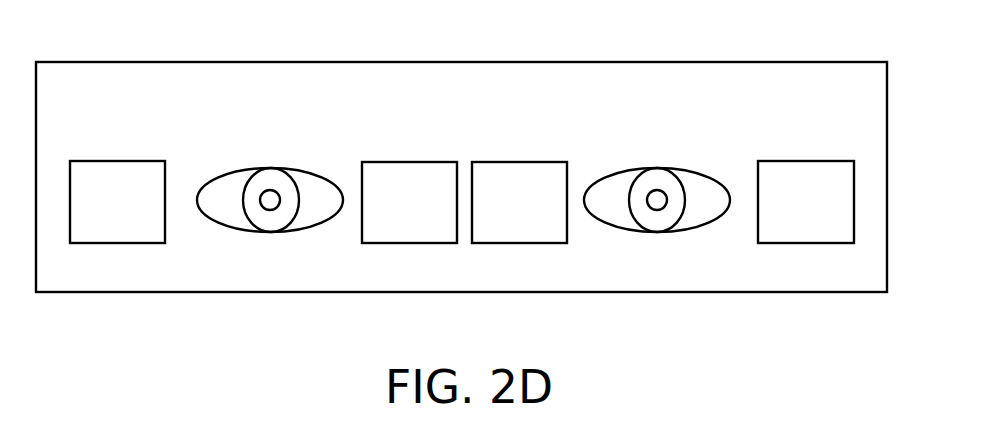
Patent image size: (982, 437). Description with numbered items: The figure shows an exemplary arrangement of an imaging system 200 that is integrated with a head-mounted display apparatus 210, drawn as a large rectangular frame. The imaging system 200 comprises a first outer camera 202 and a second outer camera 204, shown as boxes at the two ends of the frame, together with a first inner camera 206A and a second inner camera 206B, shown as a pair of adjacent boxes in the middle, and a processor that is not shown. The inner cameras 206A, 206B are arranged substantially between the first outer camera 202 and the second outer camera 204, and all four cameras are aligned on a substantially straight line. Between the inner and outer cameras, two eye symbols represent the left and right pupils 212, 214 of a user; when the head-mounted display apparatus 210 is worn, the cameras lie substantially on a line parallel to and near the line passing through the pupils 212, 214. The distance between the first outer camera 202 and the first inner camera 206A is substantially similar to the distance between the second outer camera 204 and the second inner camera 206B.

The imaging system 200 is at (441, 128).
The head-mounted display apparatus 210 is at (707, 62).
The first outer camera 202 is at (785, 215).
The second outer camera 204 is at (96, 215).
The first inner camera 206A is at (490, 217).
The second inner camera 206B is at (381, 217).
The left pupil 212 is at (657, 200).
The right pupil 214 is at (270, 200).